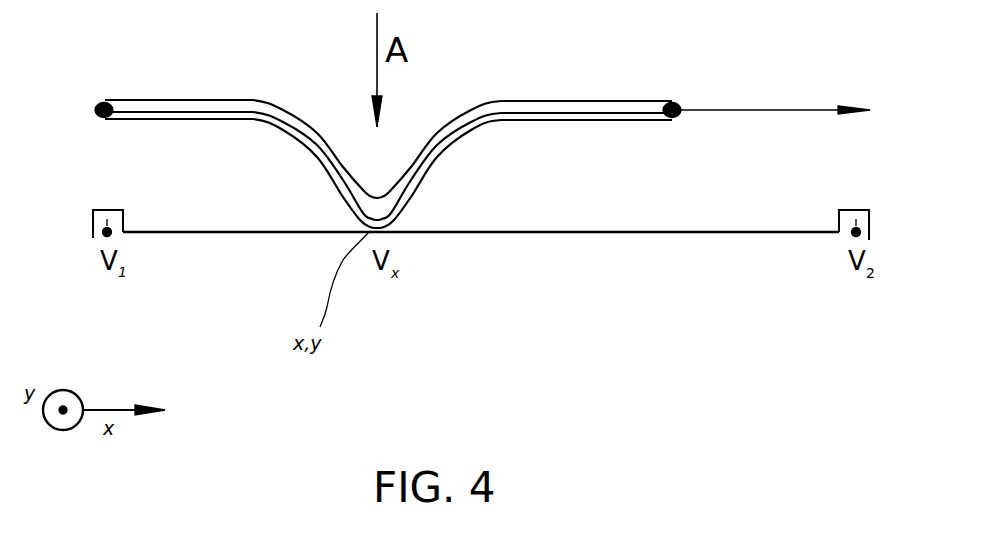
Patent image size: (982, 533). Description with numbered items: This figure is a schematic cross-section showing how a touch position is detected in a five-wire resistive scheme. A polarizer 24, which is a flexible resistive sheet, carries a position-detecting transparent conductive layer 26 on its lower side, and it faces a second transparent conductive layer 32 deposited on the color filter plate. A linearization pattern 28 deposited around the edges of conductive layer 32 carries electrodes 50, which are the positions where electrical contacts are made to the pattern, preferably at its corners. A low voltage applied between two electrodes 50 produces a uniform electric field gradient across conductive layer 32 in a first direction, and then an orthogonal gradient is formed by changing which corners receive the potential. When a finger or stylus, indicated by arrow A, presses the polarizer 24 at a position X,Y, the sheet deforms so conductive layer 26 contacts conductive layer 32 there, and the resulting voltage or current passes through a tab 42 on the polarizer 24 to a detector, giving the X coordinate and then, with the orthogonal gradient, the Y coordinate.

The polarizer 24 is at (244, 100).
The transparent conductive layer 26 is at (170, 112).
The linearization pattern 28 is at (107, 210).
The transparent conductive layer 32 is at (635, 234).
The tab 42 is at (707, 108).
The electrodes 50 is at (103, 240).